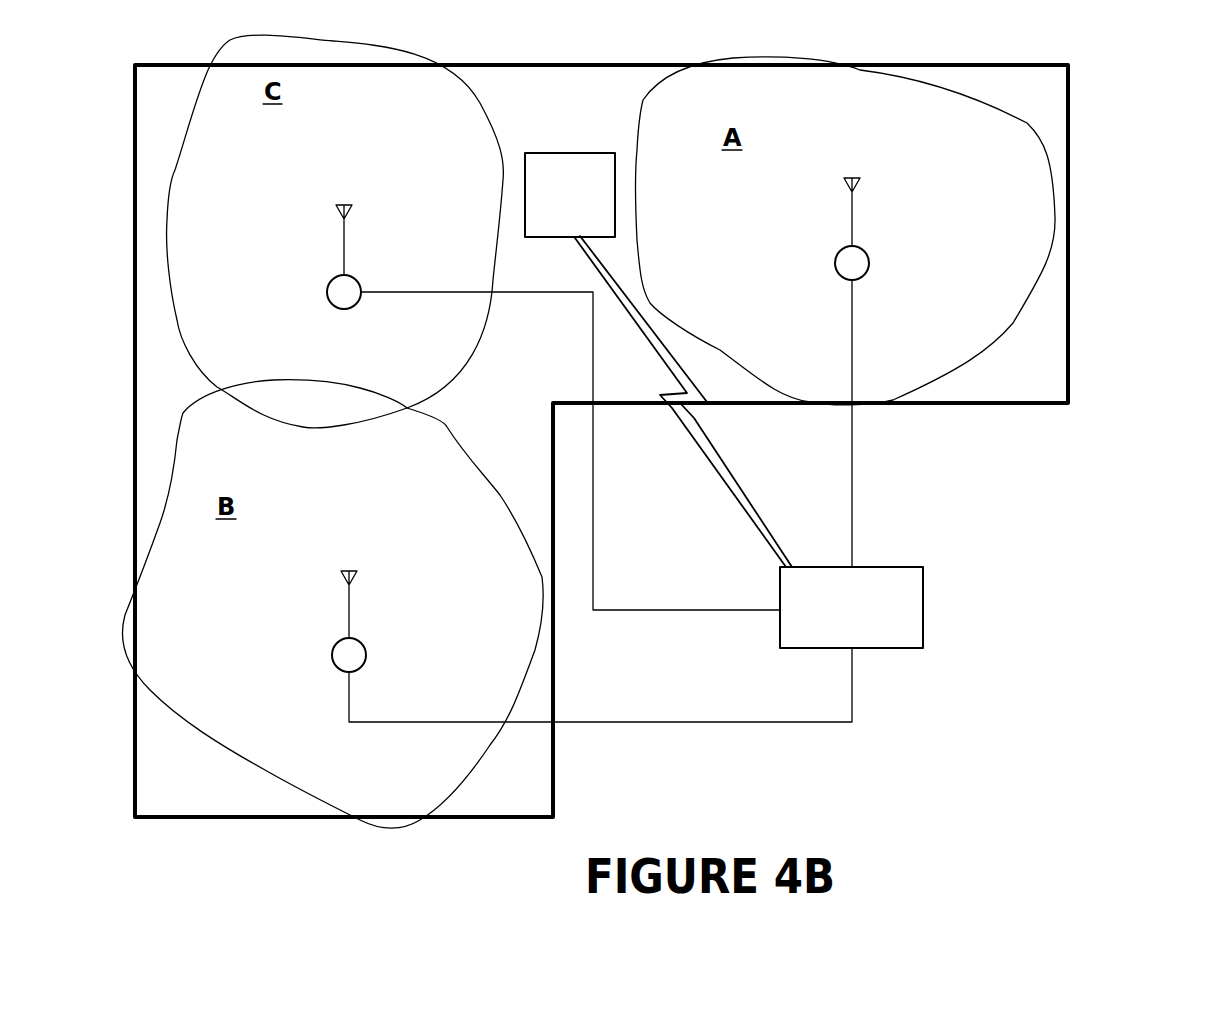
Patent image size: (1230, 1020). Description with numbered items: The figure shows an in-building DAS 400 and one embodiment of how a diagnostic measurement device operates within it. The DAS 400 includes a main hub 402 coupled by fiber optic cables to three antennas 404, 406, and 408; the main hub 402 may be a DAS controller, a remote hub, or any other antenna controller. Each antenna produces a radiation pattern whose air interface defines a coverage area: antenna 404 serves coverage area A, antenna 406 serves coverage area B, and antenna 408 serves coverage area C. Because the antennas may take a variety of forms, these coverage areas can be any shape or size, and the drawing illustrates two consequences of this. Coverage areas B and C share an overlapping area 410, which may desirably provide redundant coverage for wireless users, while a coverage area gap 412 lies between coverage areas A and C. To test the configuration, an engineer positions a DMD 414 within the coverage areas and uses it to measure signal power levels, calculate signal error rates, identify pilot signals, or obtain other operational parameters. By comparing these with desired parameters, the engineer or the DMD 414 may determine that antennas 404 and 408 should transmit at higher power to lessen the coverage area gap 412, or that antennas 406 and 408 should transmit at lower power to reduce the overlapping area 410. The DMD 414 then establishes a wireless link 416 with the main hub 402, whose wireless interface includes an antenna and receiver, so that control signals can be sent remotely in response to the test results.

The in-building DAS 400 is at (1125, 96).
The main hub 402 is at (831, 634).
The antenna 404 is at (841, 257).
The antenna 406 is at (338, 648).
The antenna 408 is at (333, 285).
The overlapping area 410 is at (312, 408).
The coverage area gap 412 is at (553, 129).
The DMD 414 is at (549, 222).
The wireless link 416 is at (733, 492).